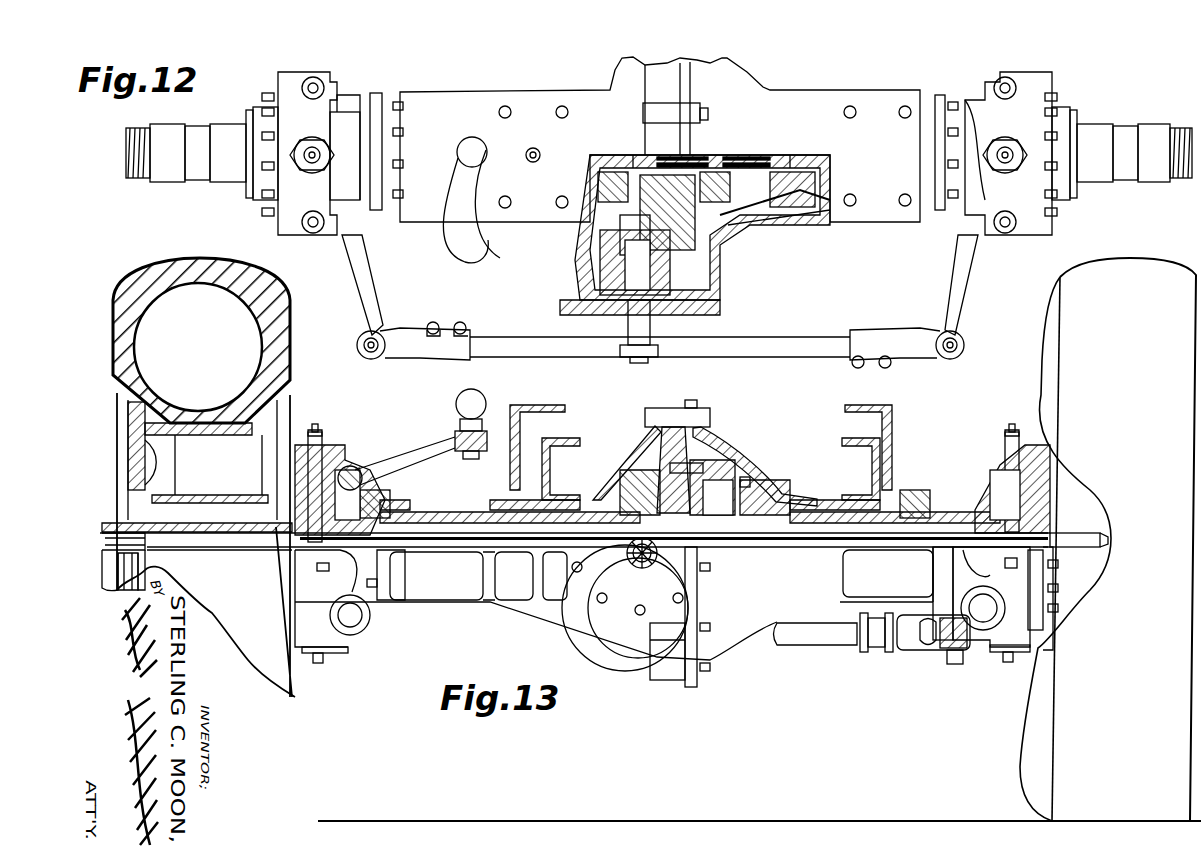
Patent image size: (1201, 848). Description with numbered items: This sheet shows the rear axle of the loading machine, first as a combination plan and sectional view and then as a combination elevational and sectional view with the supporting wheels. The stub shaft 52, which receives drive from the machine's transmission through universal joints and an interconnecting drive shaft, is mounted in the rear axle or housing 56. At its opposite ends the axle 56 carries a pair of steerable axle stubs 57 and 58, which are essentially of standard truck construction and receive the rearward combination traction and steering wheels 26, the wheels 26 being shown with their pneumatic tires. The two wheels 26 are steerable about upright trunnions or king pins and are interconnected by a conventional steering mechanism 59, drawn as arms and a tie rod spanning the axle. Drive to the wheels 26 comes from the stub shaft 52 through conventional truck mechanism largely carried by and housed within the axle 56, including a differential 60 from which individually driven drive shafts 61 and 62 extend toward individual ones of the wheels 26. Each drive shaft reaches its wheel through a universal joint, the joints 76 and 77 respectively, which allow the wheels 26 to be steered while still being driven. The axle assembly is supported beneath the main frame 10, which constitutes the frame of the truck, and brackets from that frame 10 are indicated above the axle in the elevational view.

In FIG. 13, the main frame 10 is at (515, 404).
In FIG. 12, the rearward combination traction and steering wheels 26 is at (192, 266).
In FIG. 13, the rearward combination traction and steering wheels 26 is at (1108, 539).
In FIG. 12, the stub shaft 52 is at (660, 340).
In FIG. 13, the stub shaft 52 is at (640, 565).
In FIG. 12, the rear axle or housing 56 is at (875, 208).
In FIG. 13, the rear axle or housing 56 is at (460, 520).
In FIG. 12, the steerable axle stub 57 is at (196, 140).
In FIG. 13, the steerable axle stub 57 is at (225, 537).
In FIG. 12, the steerable axle stub 58 is at (1124, 138).
In FIG. 13, the steerable axle stub 58 is at (1086, 530).
In FIG. 12, the steering mechanism 59 is at (388, 318).
In FIG. 13, the steering mechanism 59 is at (922, 662).
In FIG. 12, the differential 60 is at (725, 232).
In FIG. 13, the differential 60 is at (724, 475).
In FIG. 12, the drive shaft 61 is at (824, 160).
In FIG. 13, the drive shaft 61 is at (826, 540).
In FIG. 12, the drive shaft 62 is at (612, 163).
In FIG. 13, the drive shaft 62 is at (506, 540).
In FIG. 13, the universal joint 76 is at (985, 520).
In FIG. 13, the universal joint 77 is at (392, 488).